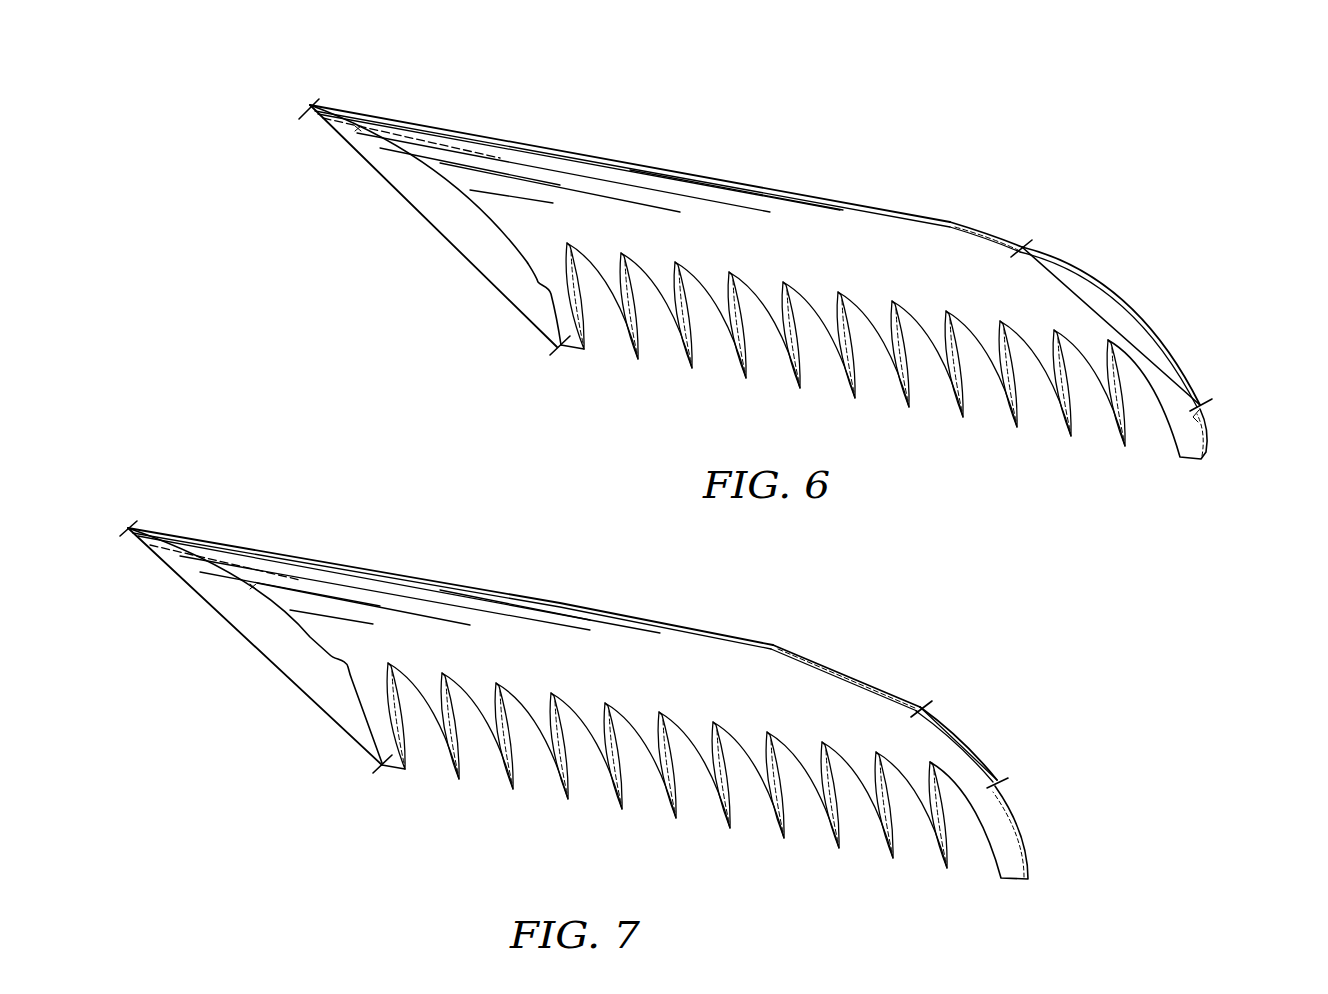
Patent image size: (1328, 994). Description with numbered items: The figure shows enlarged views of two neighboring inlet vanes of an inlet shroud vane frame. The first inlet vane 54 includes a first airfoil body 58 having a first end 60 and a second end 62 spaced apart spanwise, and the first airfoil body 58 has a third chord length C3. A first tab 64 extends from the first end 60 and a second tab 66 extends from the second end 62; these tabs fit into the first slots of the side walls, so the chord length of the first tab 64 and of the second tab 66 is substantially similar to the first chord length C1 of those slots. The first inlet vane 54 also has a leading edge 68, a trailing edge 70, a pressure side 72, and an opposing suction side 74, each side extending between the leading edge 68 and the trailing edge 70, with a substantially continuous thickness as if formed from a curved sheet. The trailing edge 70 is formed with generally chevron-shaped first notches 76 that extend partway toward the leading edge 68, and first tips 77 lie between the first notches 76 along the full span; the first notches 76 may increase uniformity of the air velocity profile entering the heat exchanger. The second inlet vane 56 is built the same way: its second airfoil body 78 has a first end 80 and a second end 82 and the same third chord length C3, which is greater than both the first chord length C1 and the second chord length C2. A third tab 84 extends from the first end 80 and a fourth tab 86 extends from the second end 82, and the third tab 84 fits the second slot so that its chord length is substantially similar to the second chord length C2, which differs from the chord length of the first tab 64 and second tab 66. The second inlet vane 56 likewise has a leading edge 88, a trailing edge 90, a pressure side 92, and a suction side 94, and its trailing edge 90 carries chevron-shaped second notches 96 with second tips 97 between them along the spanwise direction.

In FIG. 6, the first inlet vane 54 is at (254, 103).
In FIG. 7, the second inlet vane 56 is at (100, 510).
In FIG. 6, the first airfoil body 58 is at (972, 270).
In FIG. 6, the first end 60 is at (1214, 299).
In FIG. 6, the second end 62 is at (365, 232).
In FIG. 6, the first tab 64 is at (1192, 372).
In FIG. 6, the second tab 66 is at (524, 268).
In FIG. 6, the leading edge 68 is at (733, 172).
In FIG. 6, the trailing edge 70 is at (923, 444).
In FIG. 6, the pressure side 72 is at (1030, 285).
In FIG. 6, the suction side 74 is at (1090, 273).
In FIG. 6, the first notches 76 is at (601, 322).
In FIG. 6, the first tips 77 is at (641, 384).
In FIG. 7, the second airfoil body 78 is at (792, 680).
In FIG. 7, the first end 80 is at (1082, 760).
In FIG. 7, the second end 82 is at (208, 698).
In FIG. 7, the third tab 84 is at (975, 743).
In FIG. 7, the fourth tab 86 is at (312, 637).
In FIG. 7, the leading edge 88 is at (573, 590).
In FIG. 7, the trailing edge 90 is at (788, 877).
In FIG. 7, the pressure side 92 is at (842, 703).
In FIG. 7, the suction side 94 is at (908, 700).
In FIG. 7, the second notches 96 is at (420, 750).
In FIG. 7, the second tips 97 is at (461, 808).
In FIG. 6, the first chord length C1 is at (1120, 338).
In FIG. 7, the second chord length C2 is at (953, 740).
In FIG. 6, the third chord length C3 is at (440, 238).
In FIG. 7, the third chord length C3 is at (292, 684).